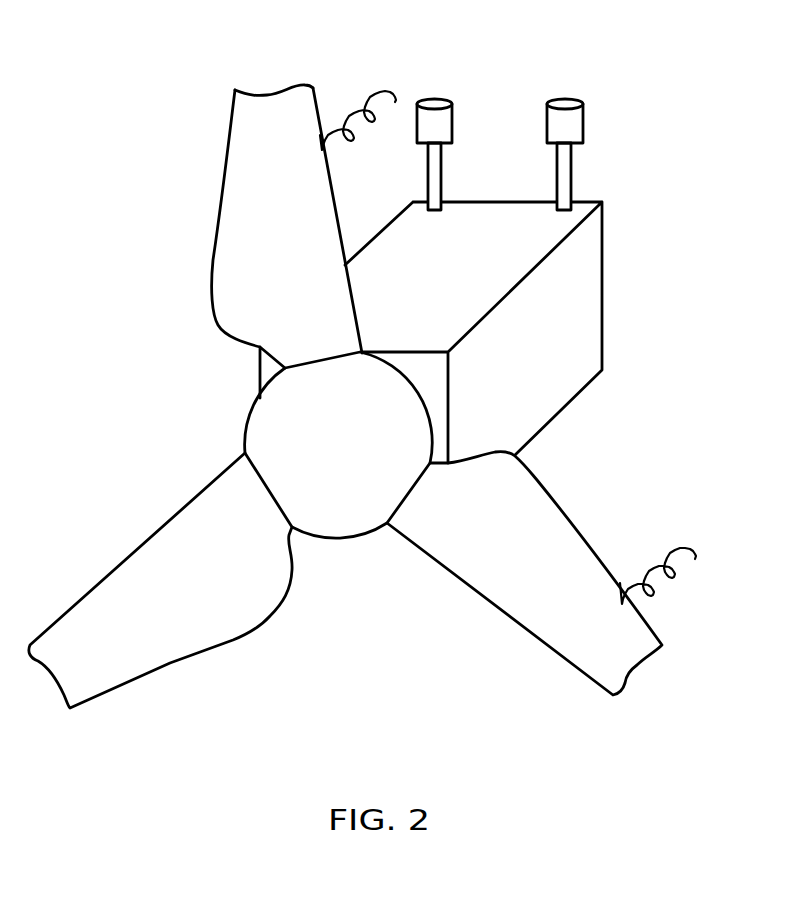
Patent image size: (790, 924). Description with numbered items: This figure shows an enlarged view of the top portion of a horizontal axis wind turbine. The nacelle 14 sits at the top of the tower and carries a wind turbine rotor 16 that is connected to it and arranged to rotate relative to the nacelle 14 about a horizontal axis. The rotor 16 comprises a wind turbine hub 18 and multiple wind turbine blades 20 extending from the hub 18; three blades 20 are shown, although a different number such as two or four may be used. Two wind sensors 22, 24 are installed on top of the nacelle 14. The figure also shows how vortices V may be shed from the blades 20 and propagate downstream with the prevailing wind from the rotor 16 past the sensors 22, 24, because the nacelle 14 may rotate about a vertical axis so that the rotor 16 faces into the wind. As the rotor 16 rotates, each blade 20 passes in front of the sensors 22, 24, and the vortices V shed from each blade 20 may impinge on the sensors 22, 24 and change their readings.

The nacelle 14 is at (580, 293).
The wind turbine rotor 16 is at (345, 396).
The wind turbine hub 18 is at (330, 522).
The wind turbine blades 20 is at (222, 197).
The wind sensor 22 is at (444, 99).
The wind sensor 24 is at (580, 99).
The vortices V is at (372, 93).